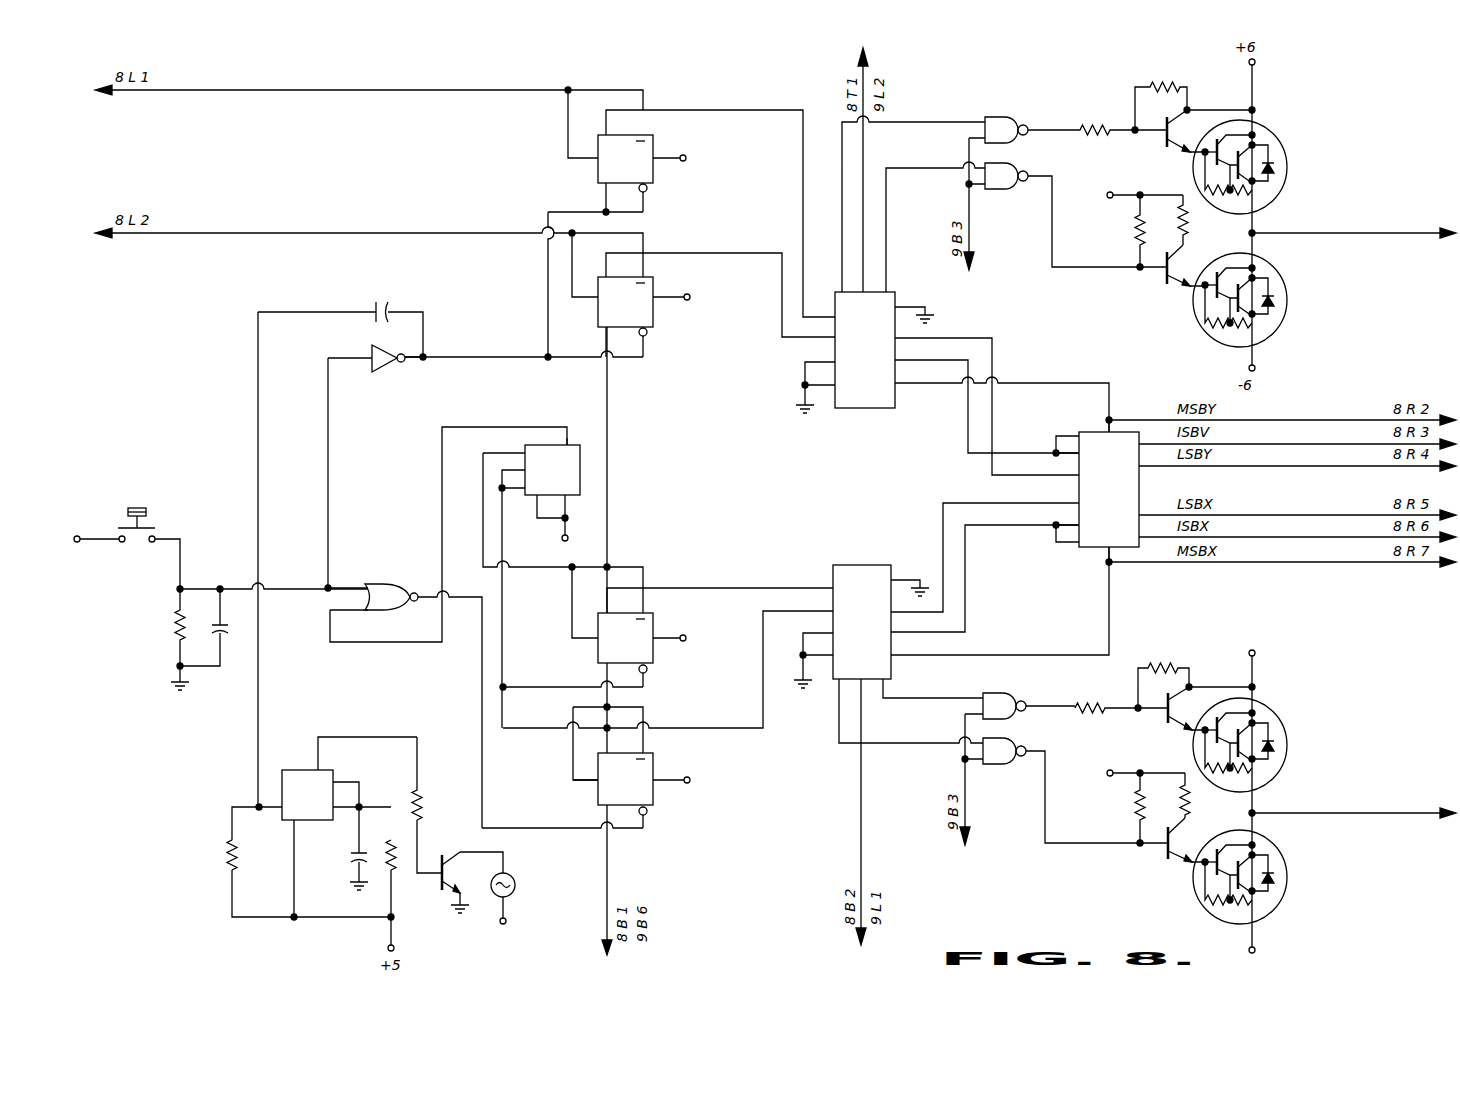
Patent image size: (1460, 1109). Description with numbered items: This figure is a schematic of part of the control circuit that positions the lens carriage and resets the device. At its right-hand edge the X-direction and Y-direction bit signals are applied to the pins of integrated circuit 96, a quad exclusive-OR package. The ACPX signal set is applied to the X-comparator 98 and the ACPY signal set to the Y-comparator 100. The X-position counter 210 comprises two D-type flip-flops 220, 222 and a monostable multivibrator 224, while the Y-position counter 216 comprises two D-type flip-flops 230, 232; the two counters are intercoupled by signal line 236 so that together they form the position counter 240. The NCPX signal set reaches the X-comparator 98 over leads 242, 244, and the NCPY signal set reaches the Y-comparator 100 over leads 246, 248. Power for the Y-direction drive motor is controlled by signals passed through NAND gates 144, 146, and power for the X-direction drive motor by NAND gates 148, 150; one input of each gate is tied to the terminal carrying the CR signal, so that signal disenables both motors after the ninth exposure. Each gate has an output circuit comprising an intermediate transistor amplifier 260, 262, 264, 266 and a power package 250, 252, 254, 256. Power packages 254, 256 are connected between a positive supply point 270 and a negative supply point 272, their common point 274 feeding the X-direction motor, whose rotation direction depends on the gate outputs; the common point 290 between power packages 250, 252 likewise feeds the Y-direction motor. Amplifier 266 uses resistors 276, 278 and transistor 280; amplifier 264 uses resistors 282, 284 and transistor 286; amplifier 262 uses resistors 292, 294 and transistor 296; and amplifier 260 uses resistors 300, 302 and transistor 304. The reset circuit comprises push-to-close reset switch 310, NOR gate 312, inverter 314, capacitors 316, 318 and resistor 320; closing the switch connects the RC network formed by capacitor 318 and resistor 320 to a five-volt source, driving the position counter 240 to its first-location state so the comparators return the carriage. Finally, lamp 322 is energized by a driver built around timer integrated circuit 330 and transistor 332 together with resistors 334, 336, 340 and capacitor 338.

The integrated circuit 96 is at (1117, 506).
The X-comparator 98 is at (872, 670).
The Y-comparator 100 is at (870, 393).
The NAND gate 144 is at (1000, 116).
The NAND gate 146 is at (1005, 192).
The NAND gate 148 is at (997, 694).
The NAND gate 150 is at (993, 766).
The X-position counter 210 is at (622, 846).
The Y-position counter 216 is at (560, 225).
The D-type flip-flop 220 is at (590, 651).
The D-type flip-flop 222 is at (590, 793).
The monostable multivibrator 224 is at (528, 497).
The D-type flip-flop 230 is at (591, 320).
The D-type flip-flop 232 is at (590, 173).
The signal line 236 is at (612, 443).
The position counter 240 is at (602, 605).
The lead 242 is at (759, 731).
The lead 244 is at (770, 593).
The lead 246 is at (759, 248).
The lead 248 is at (777, 108).
The power package 250 is at (1278, 153).
The power package 252 is at (1282, 323).
The power package 254 is at (1282, 724).
The power package 256 is at (1284, 893).
The intermediate transistor amplifier 260 is at (1156, 113).
The intermediate transistor amplifier 262 is at (1152, 251).
The intermediate transistor amplifier 264 is at (1162, 668).
The intermediate transistor amplifier 266 is at (1148, 836).
The positive supply point 270 is at (1258, 653).
The negative supply point 272 is at (1258, 950).
The common point 274 is at (1258, 812).
The resistor 276 is at (1133, 800).
The resistor 278 is at (1190, 803).
The transistor 280 is at (1163, 871).
The resistor 282 is at (1102, 701).
The resistor 284 is at (1167, 669).
The transistor 286 is at (1165, 721).
The common point 290 is at (1256, 232).
The resistor 292 is at (1133, 231).
The resistor 294 is at (1188, 229).
The transistor 296 is at (1170, 279).
The resistor 300 is at (1099, 126).
The resistor 302 is at (1162, 80).
The transistor 304 is at (1165, 146).
The reset switch 310 is at (143, 512).
The NOR gate 312 is at (383, 582).
The inverter 314 is at (381, 375).
The capacitor 316 is at (384, 306).
The capacitor 318 is at (229, 650).
The resistor 320 is at (172, 626).
The lamp 322 is at (510, 876).
The integrated circuit 330 is at (300, 768).
The transistor 332 is at (439, 885).
The resistor 334 is at (421, 797).
The resistor 336 is at (223, 861).
The capacitor 338 is at (350, 862).
The resistor 340 is at (396, 848).